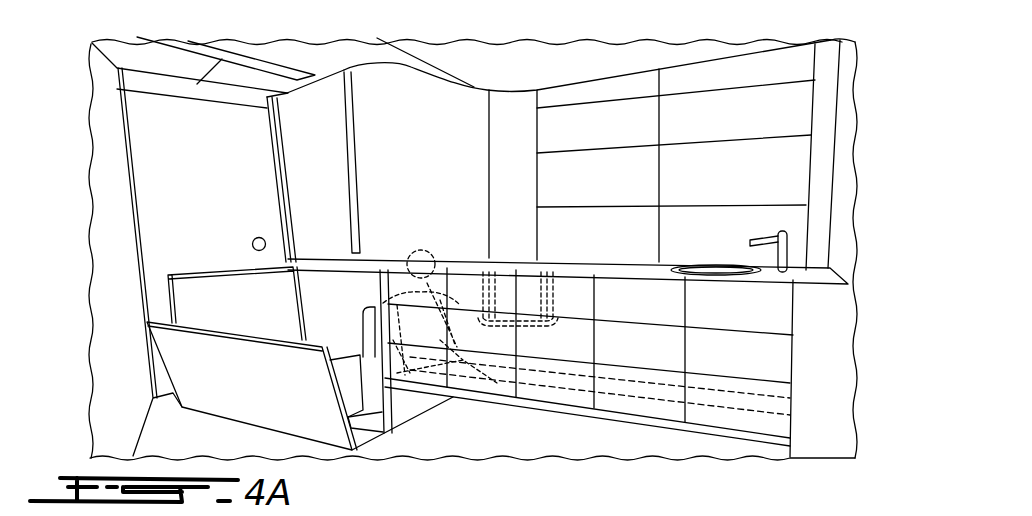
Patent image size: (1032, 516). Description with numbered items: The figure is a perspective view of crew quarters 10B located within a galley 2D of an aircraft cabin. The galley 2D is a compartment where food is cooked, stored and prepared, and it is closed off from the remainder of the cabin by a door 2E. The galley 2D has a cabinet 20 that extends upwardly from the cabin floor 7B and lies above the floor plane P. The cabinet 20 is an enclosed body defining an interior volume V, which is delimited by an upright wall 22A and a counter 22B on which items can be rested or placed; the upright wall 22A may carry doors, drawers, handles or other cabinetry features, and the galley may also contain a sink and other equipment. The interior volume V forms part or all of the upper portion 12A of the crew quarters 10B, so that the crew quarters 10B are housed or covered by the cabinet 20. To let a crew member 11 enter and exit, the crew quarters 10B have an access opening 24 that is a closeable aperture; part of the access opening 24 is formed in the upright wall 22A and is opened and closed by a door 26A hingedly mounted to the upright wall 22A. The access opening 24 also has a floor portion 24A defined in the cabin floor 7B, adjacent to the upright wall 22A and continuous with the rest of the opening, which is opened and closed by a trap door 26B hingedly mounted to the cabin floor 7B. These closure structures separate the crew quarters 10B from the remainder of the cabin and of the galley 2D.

The galley 2D is at (295, 77).
The door 2E is at (153, 152).
The counter 22B is at (516, 265).
The interior volume V is at (641, 310).
The crew quarters 10B is at (771, 312).
The upper portion 12A is at (760, 352).
The upright wall 22A is at (765, 409).
The cabinet 20 is at (777, 417).
The access opening 24 is at (327, 295).
The floor portion 24A is at (375, 438).
The crew member 11 is at (462, 368).
The door 26A is at (182, 297).
The trap door 26B is at (163, 364).
The floor plane P is at (170, 450).
The cabin floor 7B is at (501, 447).